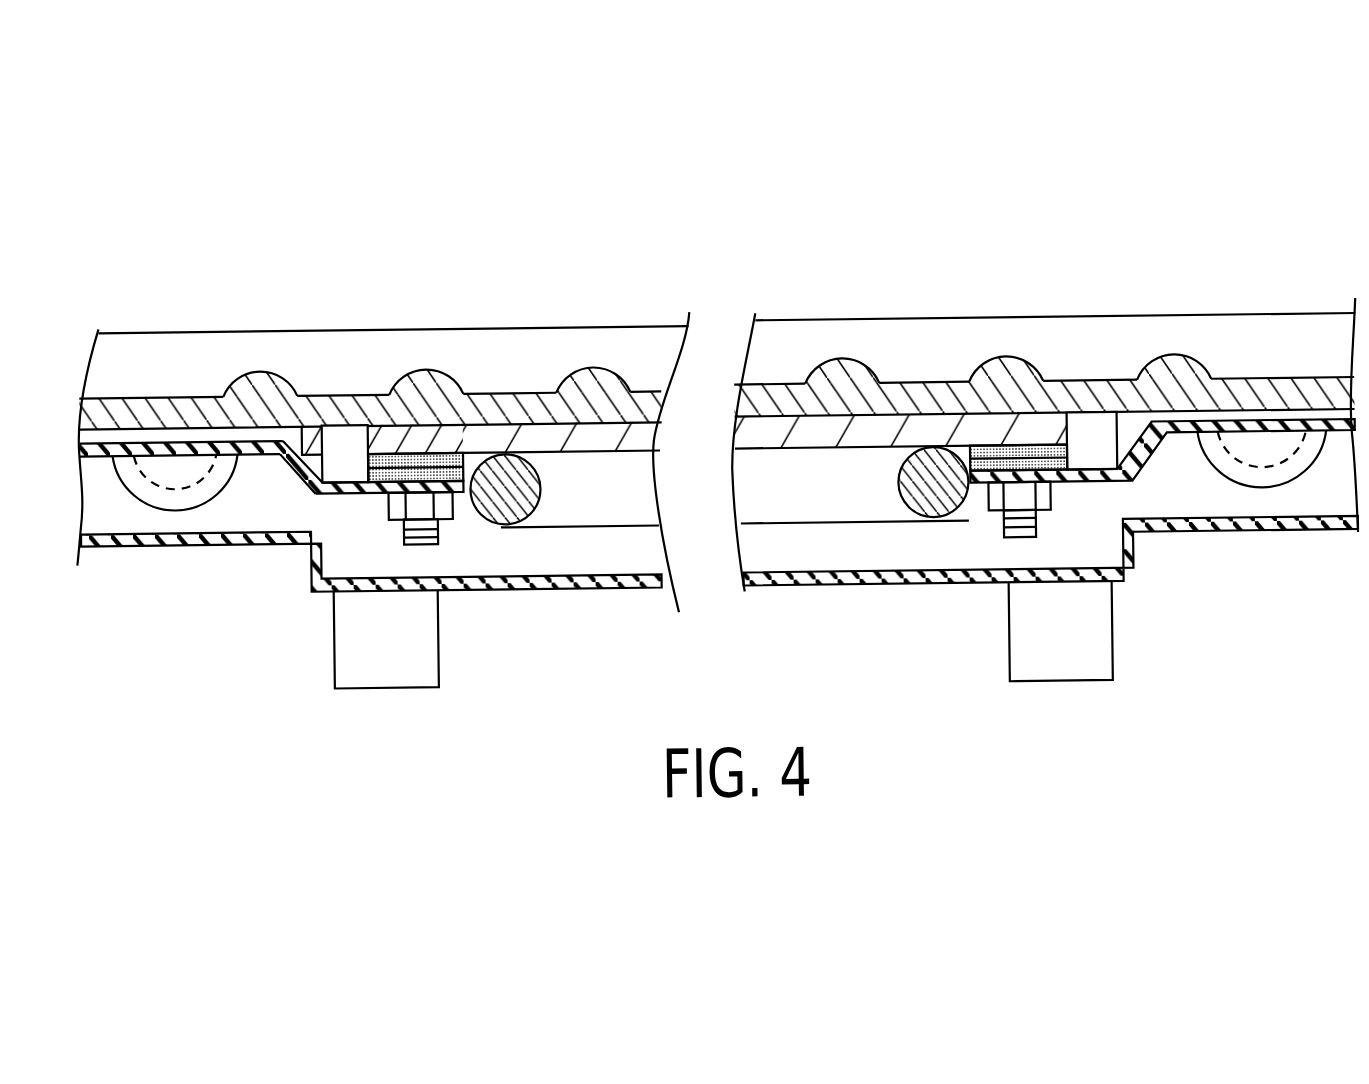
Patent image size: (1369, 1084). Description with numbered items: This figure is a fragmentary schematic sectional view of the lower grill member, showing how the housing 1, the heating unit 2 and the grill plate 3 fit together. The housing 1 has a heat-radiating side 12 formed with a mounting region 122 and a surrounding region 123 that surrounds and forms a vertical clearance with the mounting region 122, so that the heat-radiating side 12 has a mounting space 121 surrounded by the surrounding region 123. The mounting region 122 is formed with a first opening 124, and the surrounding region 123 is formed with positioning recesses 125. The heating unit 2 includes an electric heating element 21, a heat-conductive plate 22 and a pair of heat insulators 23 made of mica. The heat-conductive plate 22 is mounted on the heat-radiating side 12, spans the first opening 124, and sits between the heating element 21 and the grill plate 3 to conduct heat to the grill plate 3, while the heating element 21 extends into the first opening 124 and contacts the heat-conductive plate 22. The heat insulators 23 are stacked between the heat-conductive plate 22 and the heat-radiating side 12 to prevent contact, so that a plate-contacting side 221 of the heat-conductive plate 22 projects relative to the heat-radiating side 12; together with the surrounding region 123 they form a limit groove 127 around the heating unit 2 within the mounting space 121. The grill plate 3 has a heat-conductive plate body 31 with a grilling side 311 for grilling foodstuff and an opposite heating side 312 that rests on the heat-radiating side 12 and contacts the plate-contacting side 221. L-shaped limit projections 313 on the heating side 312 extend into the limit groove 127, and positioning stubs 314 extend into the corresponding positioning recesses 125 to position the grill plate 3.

The housing 1 is at (190, 401).
The heat-radiating side 12 is at (256, 440).
The mounting space 121 is at (337, 426).
The mounting region 122 is at (370, 489).
The surrounding region 123 is at (143, 440).
The first opening 124 is at (498, 524).
The positioning recess 125 is at (118, 483).
The limit groove 127 is at (407, 451).
The heating unit 2 is at (576, 546).
The electric heating element 21 is at (612, 509).
The heat-conductive plate 22 is at (400, 443).
The plate-contacting side 221 is at (473, 428).
The heat insulator 23 is at (452, 467).
The grill plate 3 is at (910, 364).
The heat-conductive plate body 31 is at (960, 386).
The grilling side 311 is at (1134, 385).
The heating side 312 is at (1054, 425).
The L-shaped limit projection 313 is at (338, 459).
The positioning stub 314 is at (158, 503).